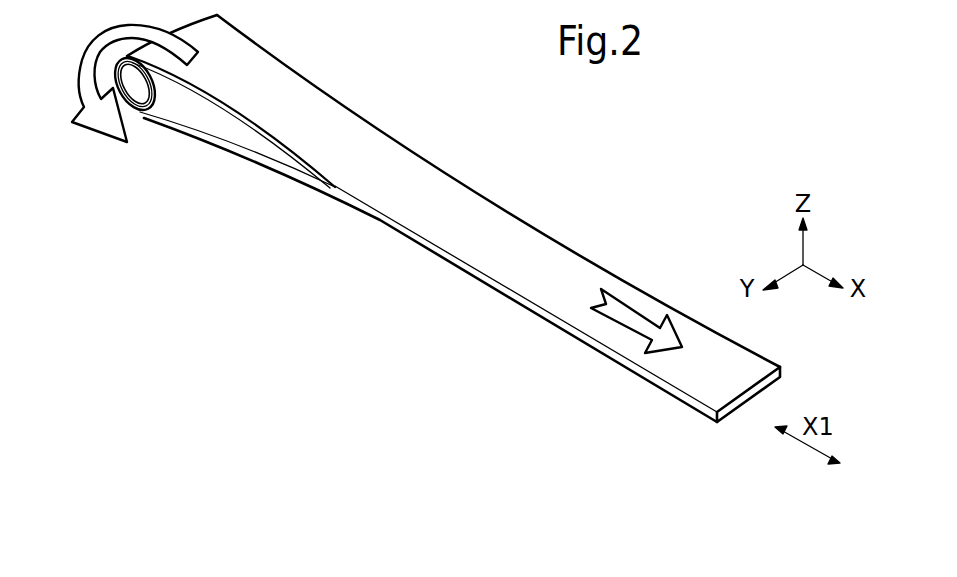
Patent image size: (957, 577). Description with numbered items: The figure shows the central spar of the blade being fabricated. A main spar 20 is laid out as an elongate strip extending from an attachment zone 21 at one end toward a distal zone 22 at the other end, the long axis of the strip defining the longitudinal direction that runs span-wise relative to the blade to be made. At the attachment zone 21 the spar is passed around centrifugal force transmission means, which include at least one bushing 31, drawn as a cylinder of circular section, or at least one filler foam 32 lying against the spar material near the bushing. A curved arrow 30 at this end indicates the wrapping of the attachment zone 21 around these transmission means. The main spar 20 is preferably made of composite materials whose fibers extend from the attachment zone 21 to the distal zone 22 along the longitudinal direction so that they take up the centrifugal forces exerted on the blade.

The main spar 20 is at (393, 178).
The attachment zone 21 is at (322, 58).
The distal zone 22 is at (646, 269).
The rolling direction / rolled end 30 is at (128, 142).
The bushing 31 is at (138, 112).
The filler foam 32 is at (197, 111).